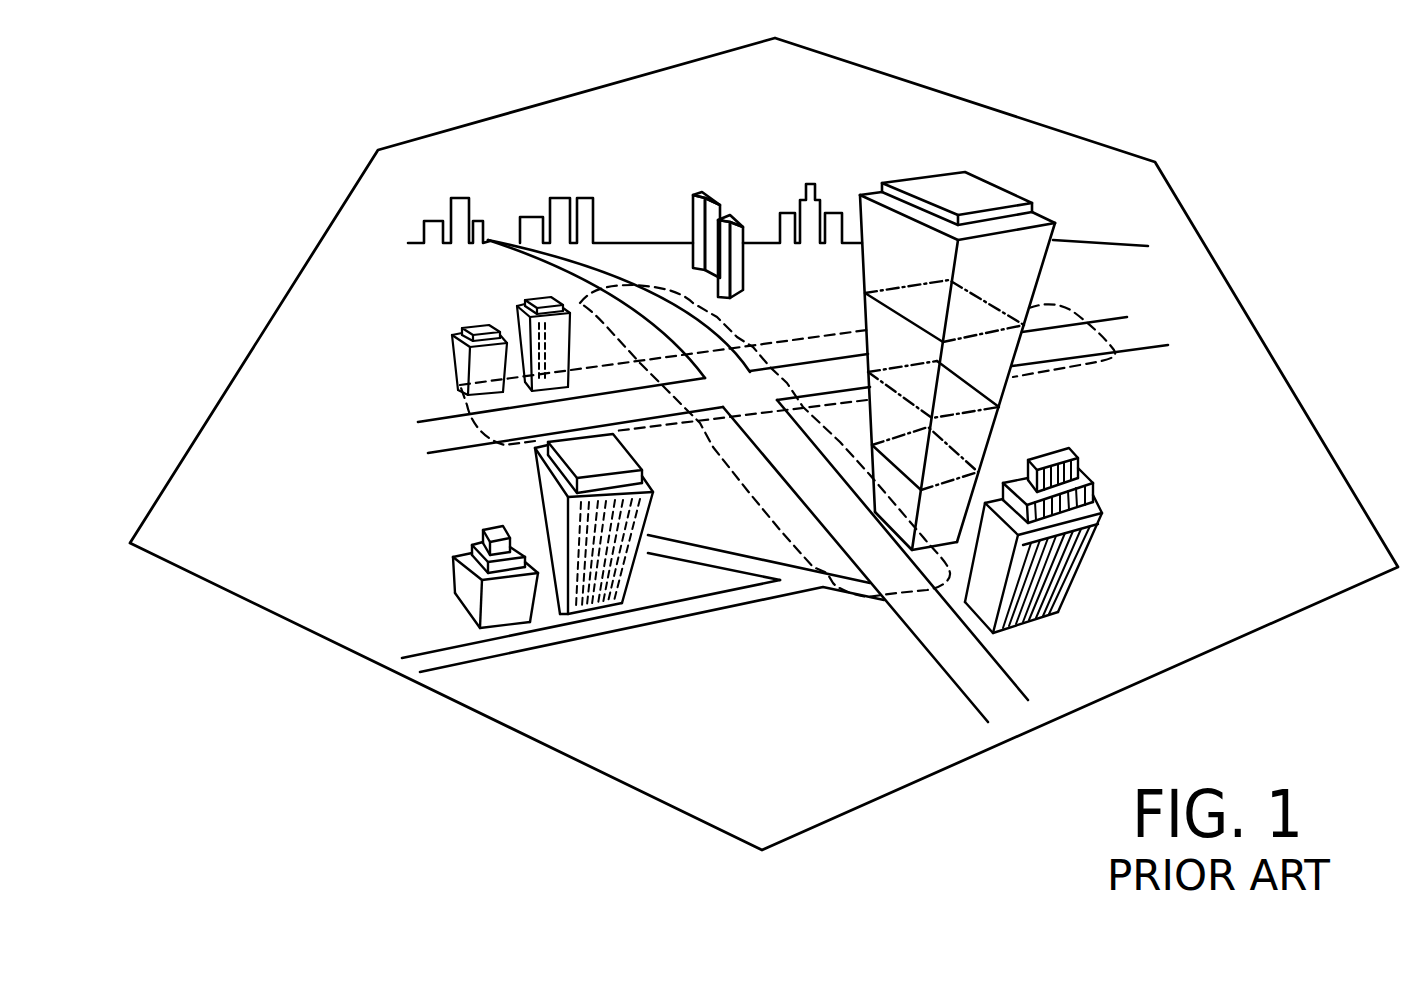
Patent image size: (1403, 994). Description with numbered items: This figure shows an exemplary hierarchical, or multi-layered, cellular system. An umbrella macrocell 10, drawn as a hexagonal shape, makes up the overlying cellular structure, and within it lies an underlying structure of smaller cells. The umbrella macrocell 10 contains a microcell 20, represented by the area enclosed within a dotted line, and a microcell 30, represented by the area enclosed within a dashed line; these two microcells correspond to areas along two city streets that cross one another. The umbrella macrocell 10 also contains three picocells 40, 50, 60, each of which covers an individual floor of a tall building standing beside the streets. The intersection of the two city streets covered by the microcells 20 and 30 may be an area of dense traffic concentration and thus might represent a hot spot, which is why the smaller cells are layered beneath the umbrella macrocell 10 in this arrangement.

The umbrella macrocell 10 is at (395, 670).
The microcell 20 is at (640, 287).
The microcell 30 is at (471, 414).
The picocell 40 is at (1024, 325).
The picocell 50 is at (977, 388).
The picocell 60 is at (929, 488).